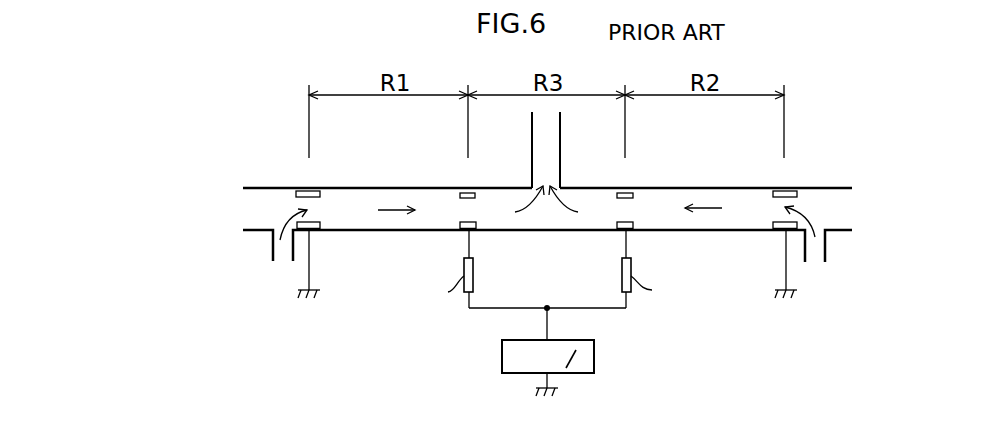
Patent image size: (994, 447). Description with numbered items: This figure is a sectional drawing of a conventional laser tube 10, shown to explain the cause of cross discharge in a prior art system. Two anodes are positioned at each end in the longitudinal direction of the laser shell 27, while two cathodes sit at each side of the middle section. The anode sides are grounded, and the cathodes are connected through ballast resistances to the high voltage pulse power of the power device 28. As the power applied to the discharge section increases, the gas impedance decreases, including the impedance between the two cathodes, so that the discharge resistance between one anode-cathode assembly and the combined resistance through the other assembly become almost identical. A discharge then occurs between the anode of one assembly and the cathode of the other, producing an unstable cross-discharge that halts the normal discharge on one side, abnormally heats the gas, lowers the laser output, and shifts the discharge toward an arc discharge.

The laser tube 10 is at (803, 180).
The laser shell 27 is at (700, 188).
The power device 28 is at (594, 352).